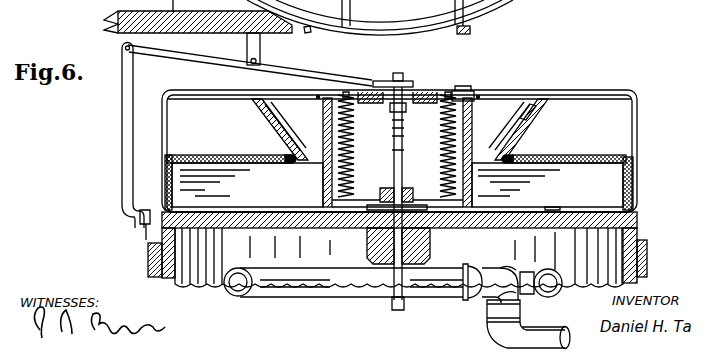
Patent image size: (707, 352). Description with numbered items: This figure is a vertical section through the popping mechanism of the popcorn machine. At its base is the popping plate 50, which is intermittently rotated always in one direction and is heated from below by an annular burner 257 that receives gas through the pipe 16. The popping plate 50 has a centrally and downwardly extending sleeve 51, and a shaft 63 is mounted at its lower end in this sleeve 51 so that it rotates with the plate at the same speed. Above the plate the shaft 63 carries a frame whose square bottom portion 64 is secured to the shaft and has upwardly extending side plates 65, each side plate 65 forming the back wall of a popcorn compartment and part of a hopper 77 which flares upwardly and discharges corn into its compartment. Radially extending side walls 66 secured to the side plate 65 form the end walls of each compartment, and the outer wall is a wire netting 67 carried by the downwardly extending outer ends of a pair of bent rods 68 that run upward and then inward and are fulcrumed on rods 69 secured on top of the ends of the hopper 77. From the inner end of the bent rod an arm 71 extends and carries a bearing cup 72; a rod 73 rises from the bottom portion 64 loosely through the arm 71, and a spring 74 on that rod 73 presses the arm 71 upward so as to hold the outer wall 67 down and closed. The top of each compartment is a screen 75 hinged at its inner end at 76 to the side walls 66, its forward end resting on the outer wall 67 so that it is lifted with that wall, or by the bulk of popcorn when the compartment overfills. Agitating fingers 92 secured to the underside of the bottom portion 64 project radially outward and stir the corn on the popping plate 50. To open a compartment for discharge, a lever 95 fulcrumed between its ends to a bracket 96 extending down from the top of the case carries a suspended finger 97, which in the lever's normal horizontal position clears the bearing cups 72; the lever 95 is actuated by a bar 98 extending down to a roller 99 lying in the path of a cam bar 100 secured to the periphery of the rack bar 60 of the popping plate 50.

The pipe 16 is at (566, 336).
The popping plate 50 is at (300, 226).
The sleeve 51 is at (432, 245).
The rack bar 60 is at (178, 280).
The shaft 63 is at (393, 177).
The bottom portion 64 is at (410, 194).
The side plate 65 is at (547, 185).
The side wall 66 is at (244, 182).
The wire netting 67 is at (634, 190).
The rod 68 is at (638, 132).
The rod 69 is at (470, 93).
The arm 71 is at (460, 90).
The bearing cup 72 is at (452, 117).
The rod 73 is at (440, 93).
The spring 74 is at (512, 118).
The screen 75 is at (578, 156).
The hinge 76 is at (510, 160).
The hopper 77 is at (537, 110).
The agitating finger 92 is at (560, 208).
The lever 95 is at (306, 70).
The bracket 96 is at (246, 38).
The suspended finger 97 is at (393, 108).
The bar 98 is at (122, 141).
The roller 99 is at (146, 233).
The cam bar 100 is at (647, 256).
The annular burner 257 is at (350, 290).